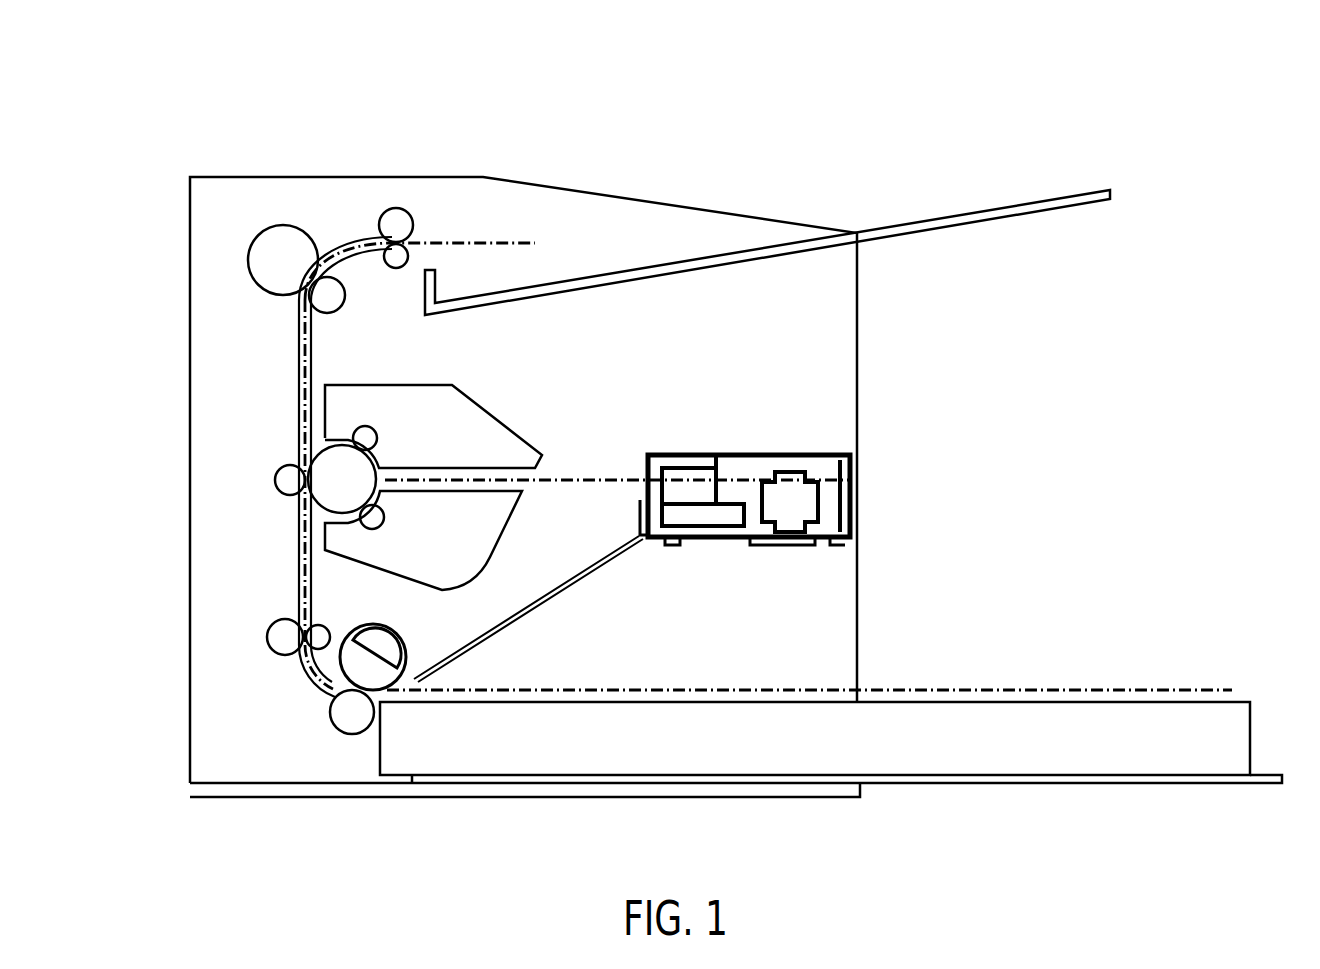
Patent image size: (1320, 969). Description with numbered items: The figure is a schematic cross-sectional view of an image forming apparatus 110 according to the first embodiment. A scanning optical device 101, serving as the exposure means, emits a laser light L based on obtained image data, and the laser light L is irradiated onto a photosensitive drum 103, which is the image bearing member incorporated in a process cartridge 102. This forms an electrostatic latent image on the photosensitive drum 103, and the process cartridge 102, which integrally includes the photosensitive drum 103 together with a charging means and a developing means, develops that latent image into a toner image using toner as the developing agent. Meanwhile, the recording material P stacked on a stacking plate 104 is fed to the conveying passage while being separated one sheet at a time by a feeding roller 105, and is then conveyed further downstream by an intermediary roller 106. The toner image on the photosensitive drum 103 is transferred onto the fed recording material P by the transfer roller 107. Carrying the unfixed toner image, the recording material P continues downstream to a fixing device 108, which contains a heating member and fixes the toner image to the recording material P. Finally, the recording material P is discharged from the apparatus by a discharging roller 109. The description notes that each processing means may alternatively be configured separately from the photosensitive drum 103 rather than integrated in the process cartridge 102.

The scanning optical device 101 is at (754, 456).
The process cartridge 102 is at (492, 410).
The photosensitive drum 103 is at (365, 475).
The stacking plate 104 is at (893, 774).
The feeding roller 105 is at (383, 642).
The intermediary roller 106 is at (283, 639).
The transfer roller 107 is at (280, 478).
The fixing device 108 is at (250, 244).
The discharging roller 109 is at (393, 208).
The image forming apparatus 110 is at (752, 91).
The laser light L is at (604, 478).
The recording material P is at (1025, 688).